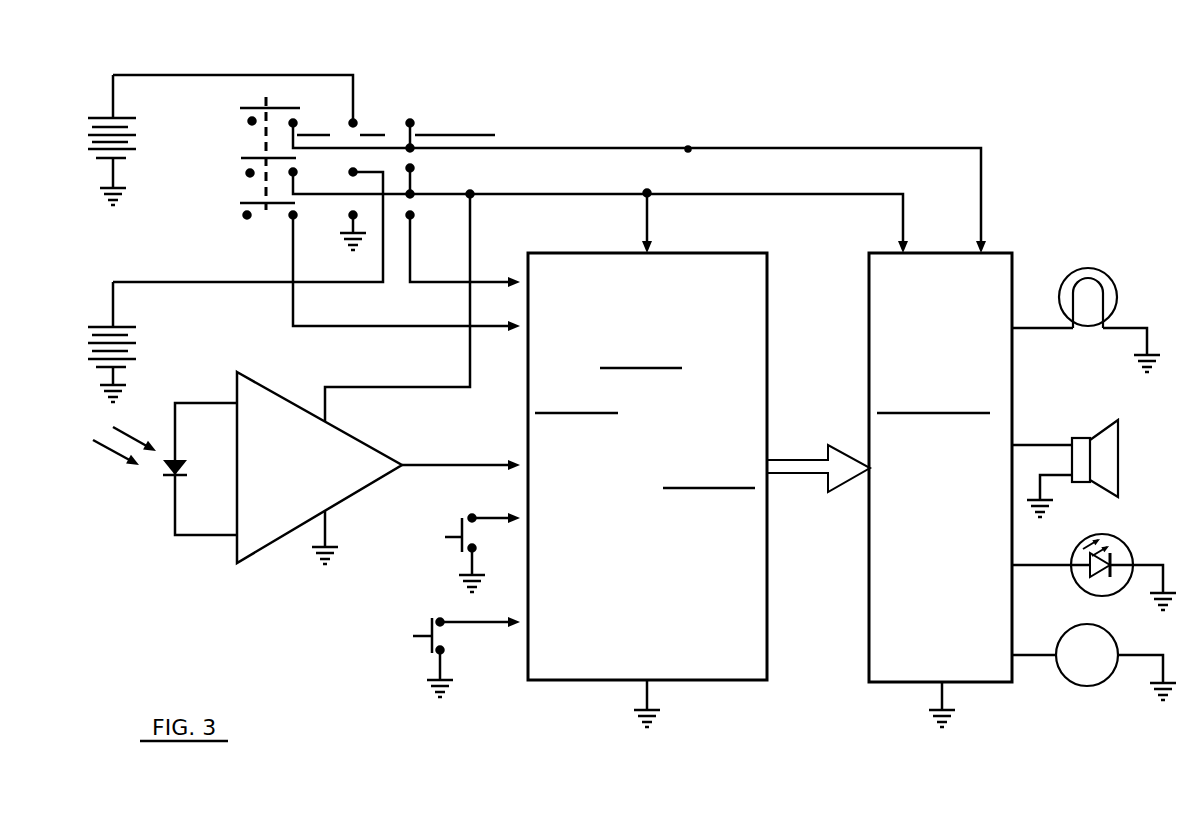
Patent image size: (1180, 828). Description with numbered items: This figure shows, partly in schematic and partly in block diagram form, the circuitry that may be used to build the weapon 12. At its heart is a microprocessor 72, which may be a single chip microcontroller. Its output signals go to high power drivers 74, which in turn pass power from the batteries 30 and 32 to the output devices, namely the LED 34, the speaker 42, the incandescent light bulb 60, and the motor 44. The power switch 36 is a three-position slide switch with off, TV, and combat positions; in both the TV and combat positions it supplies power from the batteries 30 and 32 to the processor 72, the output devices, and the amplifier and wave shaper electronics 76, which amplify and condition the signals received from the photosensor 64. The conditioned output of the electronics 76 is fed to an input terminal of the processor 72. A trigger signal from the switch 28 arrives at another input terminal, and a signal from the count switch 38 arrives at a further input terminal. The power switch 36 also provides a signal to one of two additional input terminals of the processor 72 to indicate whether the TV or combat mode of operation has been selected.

The weapon 12 is at (686, 100).
The battery 30 is at (132, 125).
The battery 32 is at (133, 350).
The power switch 36 is at (265, 102).
The amplifier and wave shaper electronics 76 is at (260, 380).
The photosensor 64 is at (165, 465).
The switch 28 is at (460, 527).
The count switch 38 is at (430, 618).
The microprocessor 72 is at (692, 608).
The high power drivers 74 is at (983, 608).
The incandescent light bulb 60 is at (1088, 268).
The speaker 42 is at (1108, 430).
The LED 34 is at (1125, 545).
The motor 44 is at (1070, 668).